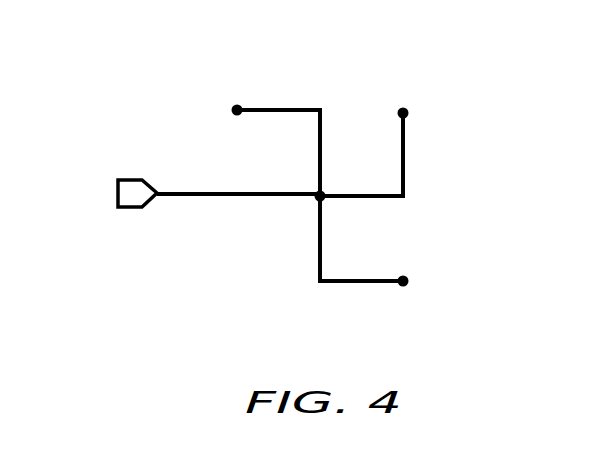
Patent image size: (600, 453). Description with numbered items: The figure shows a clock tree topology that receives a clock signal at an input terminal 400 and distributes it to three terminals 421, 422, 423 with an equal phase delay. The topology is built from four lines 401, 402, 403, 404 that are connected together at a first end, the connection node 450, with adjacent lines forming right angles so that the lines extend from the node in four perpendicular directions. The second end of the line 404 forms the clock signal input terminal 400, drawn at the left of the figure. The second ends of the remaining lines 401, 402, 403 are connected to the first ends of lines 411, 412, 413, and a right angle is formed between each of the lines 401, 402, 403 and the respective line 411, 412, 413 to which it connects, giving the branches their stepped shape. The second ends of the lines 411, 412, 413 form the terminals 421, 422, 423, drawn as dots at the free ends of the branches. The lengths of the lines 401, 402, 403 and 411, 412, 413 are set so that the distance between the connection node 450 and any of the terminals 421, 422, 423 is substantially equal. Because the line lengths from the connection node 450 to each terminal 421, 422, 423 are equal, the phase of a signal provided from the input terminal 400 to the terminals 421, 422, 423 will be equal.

The input terminal 400 is at (130, 180).
The line 401 is at (320, 163).
The line 402 is at (372, 197).
The line 403 is at (319, 258).
The line 404 is at (199, 197).
The line 411 is at (287, 110).
The line 412 is at (405, 147).
The line 413 is at (360, 282).
The terminal 421 is at (237, 110).
The terminal 422 is at (403, 113).
The terminal 423 is at (403, 282).
The connection node 450 is at (318, 200).